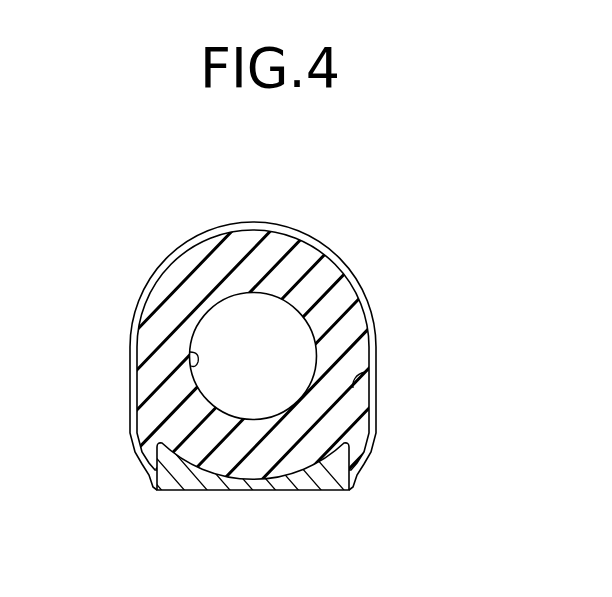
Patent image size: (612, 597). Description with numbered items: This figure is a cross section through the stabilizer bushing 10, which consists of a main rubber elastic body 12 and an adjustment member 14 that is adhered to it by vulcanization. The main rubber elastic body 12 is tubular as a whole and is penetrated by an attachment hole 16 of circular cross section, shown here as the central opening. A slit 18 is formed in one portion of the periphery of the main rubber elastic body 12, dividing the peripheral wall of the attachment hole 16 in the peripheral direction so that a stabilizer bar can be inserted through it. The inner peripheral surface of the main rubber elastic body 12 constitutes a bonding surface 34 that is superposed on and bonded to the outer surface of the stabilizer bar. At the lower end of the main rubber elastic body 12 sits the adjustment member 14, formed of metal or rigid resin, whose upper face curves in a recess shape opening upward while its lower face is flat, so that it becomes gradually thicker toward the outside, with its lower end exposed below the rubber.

The stabilizer bushing 10 is at (401, 216).
The main rubber elastic body 12 is at (364, 286).
The adjustment member 14 is at (313, 502).
The attachment hole 16 is at (190, 352).
The slit 18 is at (365, 372).
The bonding surface 34 is at (262, 300).